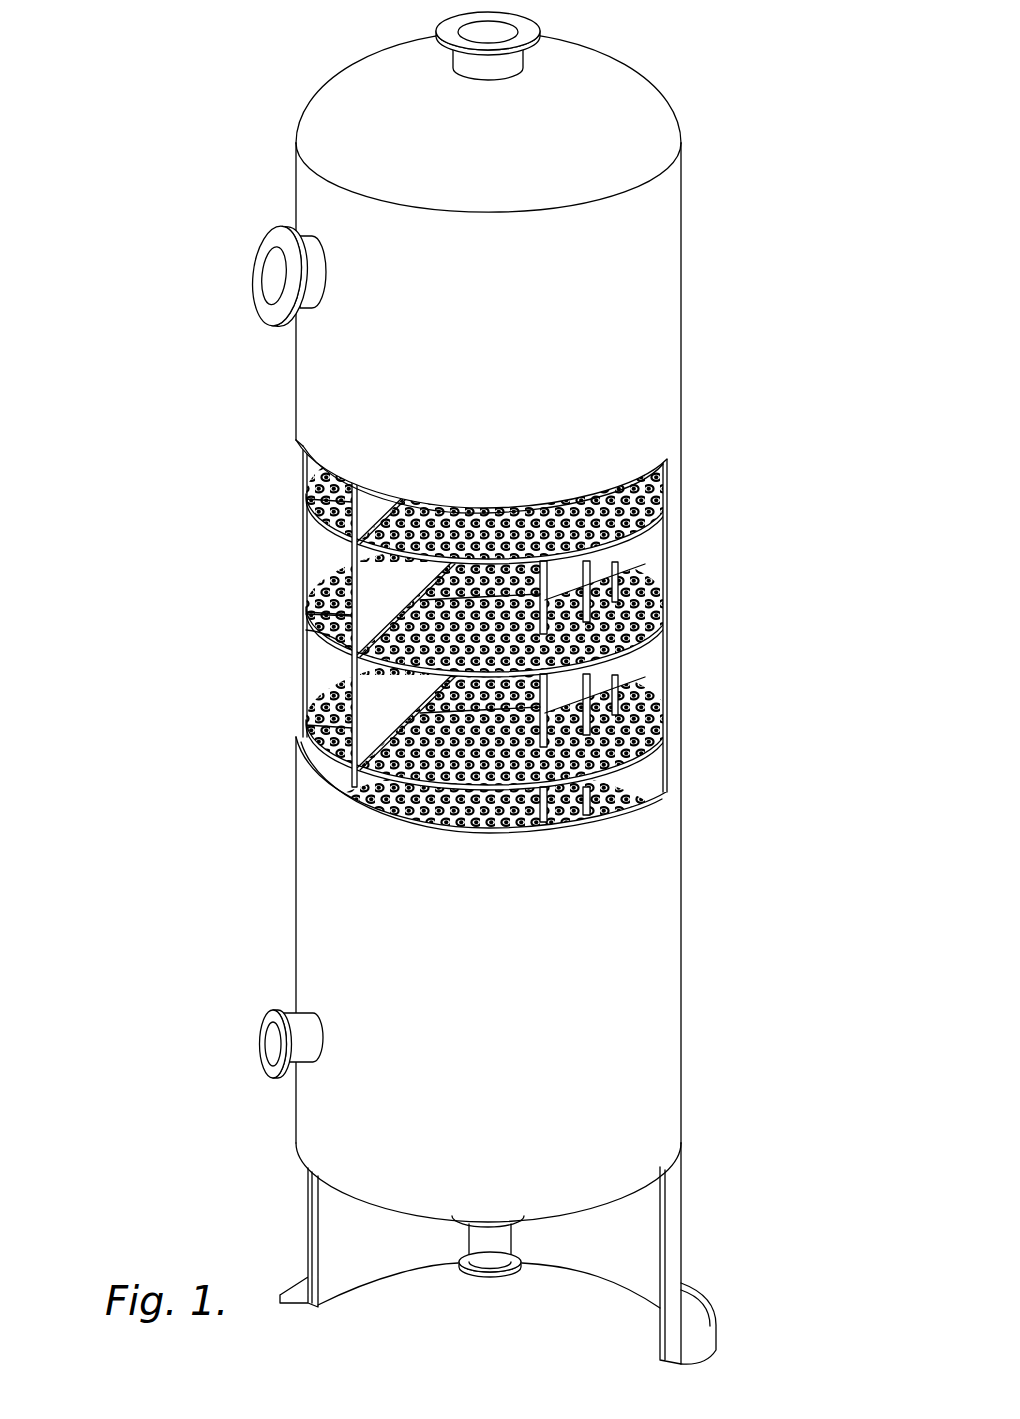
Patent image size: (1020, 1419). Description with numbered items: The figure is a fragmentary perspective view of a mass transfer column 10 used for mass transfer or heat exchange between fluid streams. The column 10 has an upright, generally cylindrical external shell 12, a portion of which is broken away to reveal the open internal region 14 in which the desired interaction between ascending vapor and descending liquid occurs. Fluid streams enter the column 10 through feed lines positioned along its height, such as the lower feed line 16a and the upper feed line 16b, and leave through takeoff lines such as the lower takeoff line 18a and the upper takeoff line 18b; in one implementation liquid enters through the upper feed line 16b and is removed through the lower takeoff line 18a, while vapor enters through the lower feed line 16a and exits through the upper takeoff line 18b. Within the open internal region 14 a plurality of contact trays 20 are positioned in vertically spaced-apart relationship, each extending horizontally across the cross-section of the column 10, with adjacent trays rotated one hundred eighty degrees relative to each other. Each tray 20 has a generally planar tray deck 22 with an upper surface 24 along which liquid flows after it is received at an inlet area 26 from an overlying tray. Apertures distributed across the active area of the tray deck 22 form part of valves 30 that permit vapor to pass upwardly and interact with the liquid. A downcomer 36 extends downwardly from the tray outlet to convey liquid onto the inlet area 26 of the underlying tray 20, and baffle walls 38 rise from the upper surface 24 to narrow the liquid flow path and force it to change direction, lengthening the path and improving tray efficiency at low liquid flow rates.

The mass transfer column 10 is at (464, 682).
The external shell 12 is at (665, 471).
The open internal region 14 is at (646, 563).
The lower feed line 16a is at (276, 1048).
The upper feed line 16b is at (278, 277).
The lower takeoff line 18a is at (496, 1245).
The upper takeoff line 18b is at (494, 30).
The contact tray 20 is at (660, 616).
The tray deck 22 is at (653, 629).
The upper surface 24 is at (612, 650).
The inlet area 26 is at (332, 621).
The valve 30 is at (638, 509).
The downcomer 36 is at (323, 562).
The baffle wall 38 is at (626, 554).